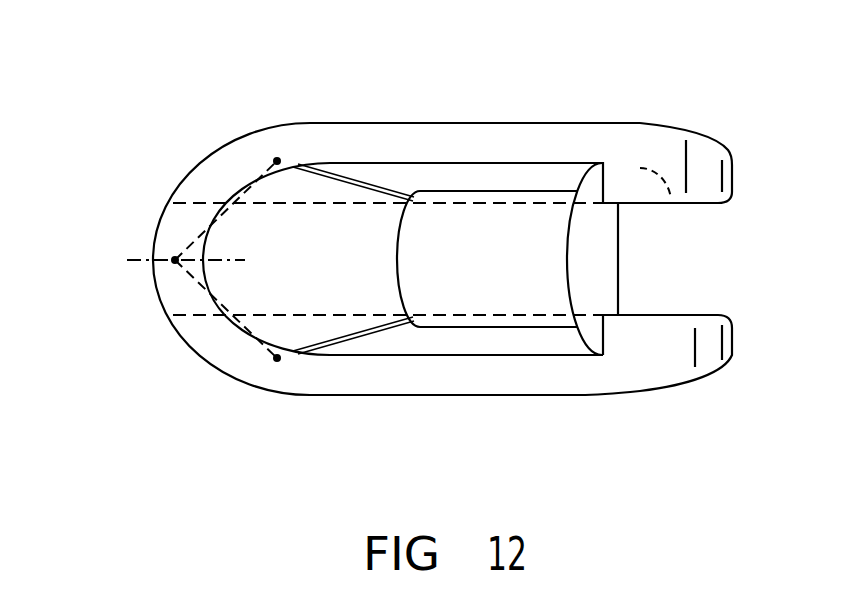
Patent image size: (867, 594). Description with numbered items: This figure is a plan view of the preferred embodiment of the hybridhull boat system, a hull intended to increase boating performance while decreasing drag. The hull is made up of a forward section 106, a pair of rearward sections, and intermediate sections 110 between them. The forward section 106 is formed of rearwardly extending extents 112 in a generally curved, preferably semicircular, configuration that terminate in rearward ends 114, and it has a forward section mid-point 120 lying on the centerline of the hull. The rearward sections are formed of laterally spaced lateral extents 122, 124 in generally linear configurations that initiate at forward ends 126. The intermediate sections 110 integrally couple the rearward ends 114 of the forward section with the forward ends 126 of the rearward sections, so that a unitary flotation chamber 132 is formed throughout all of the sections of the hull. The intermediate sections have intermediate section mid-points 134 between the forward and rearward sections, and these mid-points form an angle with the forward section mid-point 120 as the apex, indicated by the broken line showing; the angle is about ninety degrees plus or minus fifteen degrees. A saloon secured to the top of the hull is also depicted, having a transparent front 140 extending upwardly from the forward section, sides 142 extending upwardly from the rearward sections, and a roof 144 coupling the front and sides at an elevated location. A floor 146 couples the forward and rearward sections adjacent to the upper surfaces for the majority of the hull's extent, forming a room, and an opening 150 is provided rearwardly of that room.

The forward section 106 is at (166, 298).
The intermediate sections 110 is at (270, 384).
The rearwardly extending extents 112 is at (215, 180).
The rearward ends 114 is at (268, 132).
The forward section mid-point 120 is at (175, 260).
The lateral extent 122 is at (507, 122).
The lateral extent 124 is at (507, 396).
The forward ends 126 is at (332, 124).
The flotation chamber 132 is at (672, 198).
The intermediate section mid-points 134 is at (277, 161).
The transparent front 140 is at (355, 268).
The sides 142 is at (531, 172).
The roof 144 is at (517, 272).
The floor 146 is at (600, 263).
The opening 150 is at (588, 330).